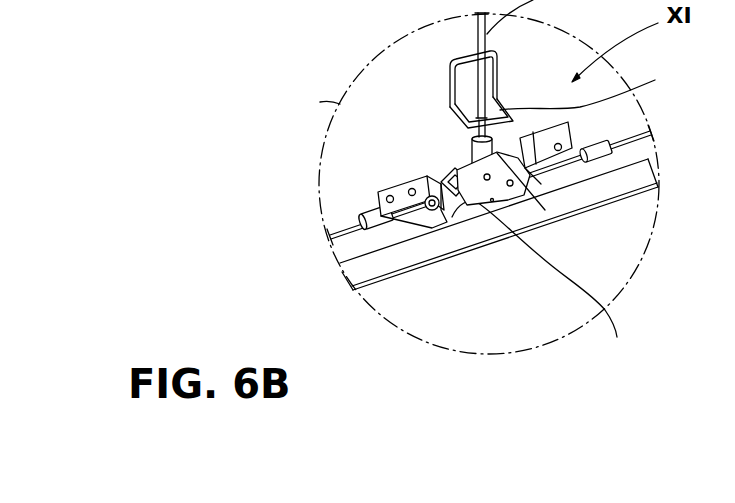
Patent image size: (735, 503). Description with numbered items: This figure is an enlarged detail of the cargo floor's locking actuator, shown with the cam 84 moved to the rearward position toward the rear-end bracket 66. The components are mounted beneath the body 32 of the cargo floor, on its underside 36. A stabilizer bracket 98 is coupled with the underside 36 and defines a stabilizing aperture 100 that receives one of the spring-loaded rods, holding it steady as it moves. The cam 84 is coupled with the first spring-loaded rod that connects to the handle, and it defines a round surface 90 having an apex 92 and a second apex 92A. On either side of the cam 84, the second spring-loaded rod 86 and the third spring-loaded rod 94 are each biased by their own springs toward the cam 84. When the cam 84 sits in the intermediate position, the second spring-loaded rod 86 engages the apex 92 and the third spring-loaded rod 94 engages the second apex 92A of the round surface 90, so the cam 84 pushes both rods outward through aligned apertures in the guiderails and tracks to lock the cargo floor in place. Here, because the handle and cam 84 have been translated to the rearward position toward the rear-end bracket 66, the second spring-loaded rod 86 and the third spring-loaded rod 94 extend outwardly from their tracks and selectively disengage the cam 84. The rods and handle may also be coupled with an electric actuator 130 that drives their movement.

The body 32 is at (356, 140).
The underside 36 is at (449, 107).
The rear-end bracket 66 is at (634, 184).
The cam 84 is at (544, 282).
The second spring-loaded rod 86 is at (344, 226).
The round surface 90 is at (442, 172).
The apex 92 is at (583, 187).
The second apex 92A is at (492, 200).
The third spring-loaded rod 94 is at (639, 127).
The stabilizer bracket 98 is at (483, 84).
The stabilizing aperture 100 is at (599, 83).
The electric actuator 130 is at (378, 203).